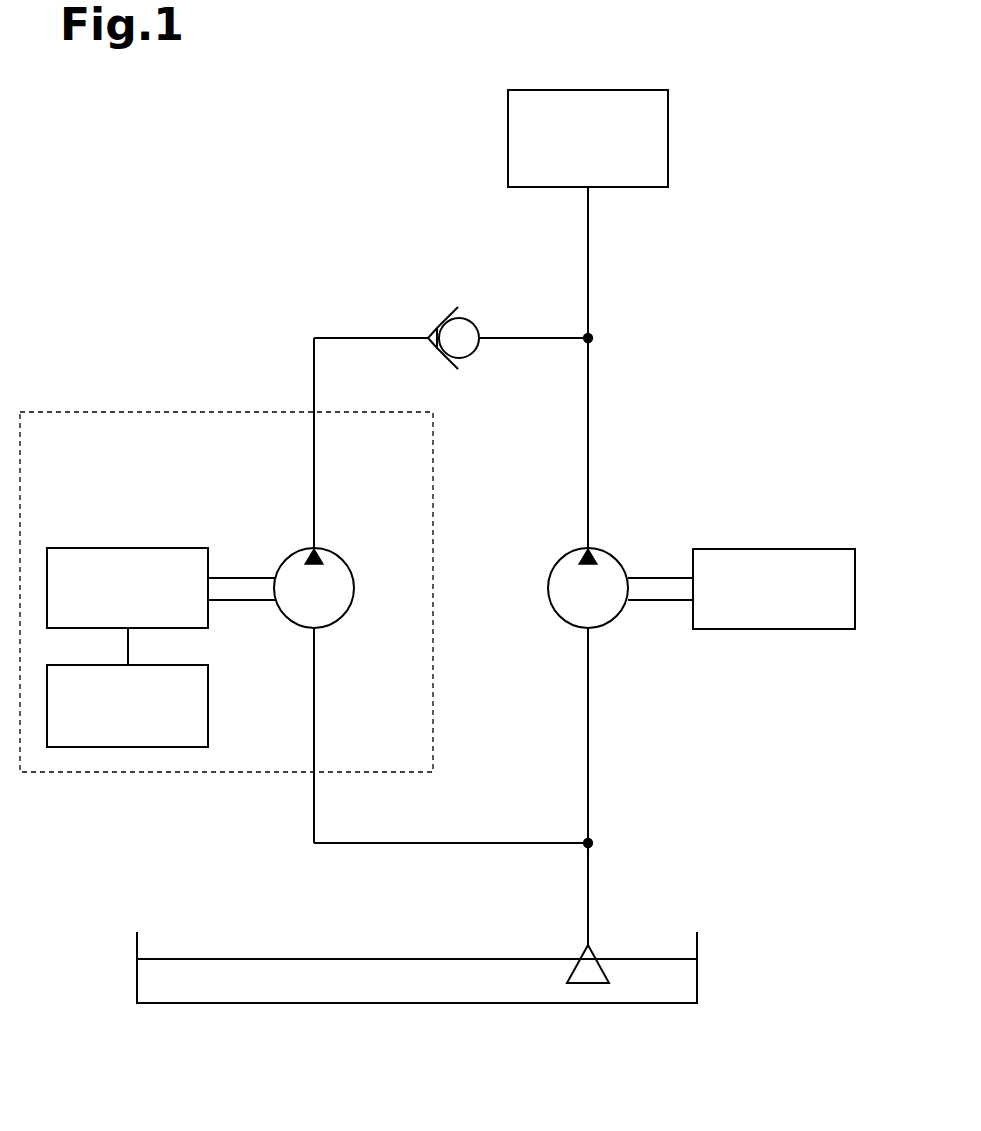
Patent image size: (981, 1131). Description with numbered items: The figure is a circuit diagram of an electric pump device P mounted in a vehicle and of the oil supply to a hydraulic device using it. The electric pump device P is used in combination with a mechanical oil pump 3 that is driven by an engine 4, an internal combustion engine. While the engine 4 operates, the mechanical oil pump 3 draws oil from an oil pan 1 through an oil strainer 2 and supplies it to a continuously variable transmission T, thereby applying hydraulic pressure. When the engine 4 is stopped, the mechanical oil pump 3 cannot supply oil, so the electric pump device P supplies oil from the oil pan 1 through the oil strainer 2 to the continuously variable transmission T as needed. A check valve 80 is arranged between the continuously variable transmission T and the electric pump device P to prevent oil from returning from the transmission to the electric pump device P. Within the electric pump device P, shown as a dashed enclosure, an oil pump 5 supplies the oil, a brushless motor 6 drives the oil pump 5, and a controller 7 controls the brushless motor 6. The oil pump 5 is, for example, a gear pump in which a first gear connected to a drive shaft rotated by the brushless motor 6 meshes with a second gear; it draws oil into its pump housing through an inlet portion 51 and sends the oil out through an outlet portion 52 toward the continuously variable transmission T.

The oil pan 1 is at (697, 978).
The oil strainer 2 is at (573, 970).
The mechanical oil pump 3 is at (617, 553).
The engine 4 is at (750, 549).
The oil pump 5 is at (315, 597).
The inlet portion 51 is at (297, 648).
The outlet portion 52 is at (302, 531).
The brushless motor 6 is at (145, 548).
The controller 7 is at (208, 728).
The check valve 80 is at (473, 307).
The electric pump device P is at (108, 411).
The continuously variable transmission T is at (668, 133).